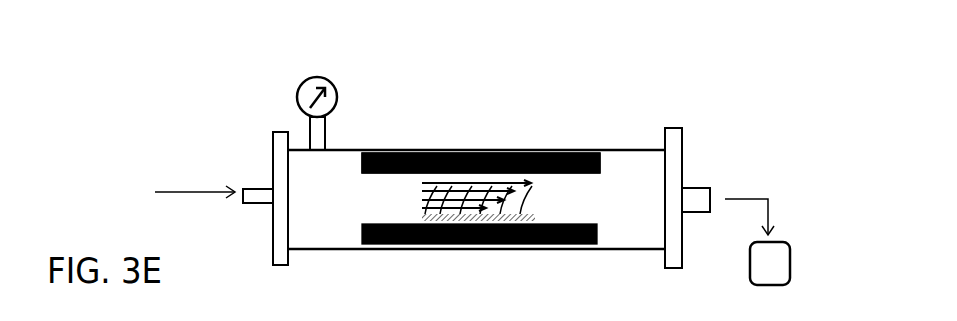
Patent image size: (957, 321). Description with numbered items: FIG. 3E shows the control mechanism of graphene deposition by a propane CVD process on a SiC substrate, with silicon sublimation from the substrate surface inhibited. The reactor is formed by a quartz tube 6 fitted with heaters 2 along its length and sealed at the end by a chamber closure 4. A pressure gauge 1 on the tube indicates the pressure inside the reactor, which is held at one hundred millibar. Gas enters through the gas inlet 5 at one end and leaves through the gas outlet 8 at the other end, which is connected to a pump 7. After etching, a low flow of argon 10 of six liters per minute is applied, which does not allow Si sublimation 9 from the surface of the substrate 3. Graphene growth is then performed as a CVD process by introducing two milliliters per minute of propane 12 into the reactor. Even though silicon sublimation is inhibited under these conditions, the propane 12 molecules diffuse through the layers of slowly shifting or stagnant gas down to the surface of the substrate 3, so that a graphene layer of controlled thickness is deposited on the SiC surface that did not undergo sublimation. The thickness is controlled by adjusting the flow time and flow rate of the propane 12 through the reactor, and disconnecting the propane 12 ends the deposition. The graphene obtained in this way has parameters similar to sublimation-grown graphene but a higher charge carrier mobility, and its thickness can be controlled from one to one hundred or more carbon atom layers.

The pressure gauge 1 is at (343, 90).
The heaters 2 is at (410, 151).
The substrate 3 is at (481, 213).
The chamber closure 4 is at (273, 228).
The gas inlet 5 is at (214, 183).
The quartz tube 6 is at (632, 254).
The pump 7 is at (758, 262).
The gas outlet 8 is at (728, 196).
The Si sublimation 9 is at (553, 155).
The argon 10 is at (500, 207).
The propane 12 is at (423, 210).